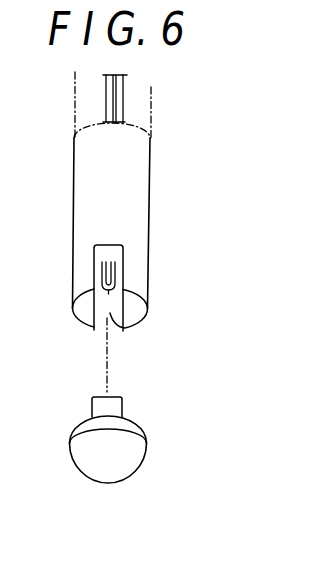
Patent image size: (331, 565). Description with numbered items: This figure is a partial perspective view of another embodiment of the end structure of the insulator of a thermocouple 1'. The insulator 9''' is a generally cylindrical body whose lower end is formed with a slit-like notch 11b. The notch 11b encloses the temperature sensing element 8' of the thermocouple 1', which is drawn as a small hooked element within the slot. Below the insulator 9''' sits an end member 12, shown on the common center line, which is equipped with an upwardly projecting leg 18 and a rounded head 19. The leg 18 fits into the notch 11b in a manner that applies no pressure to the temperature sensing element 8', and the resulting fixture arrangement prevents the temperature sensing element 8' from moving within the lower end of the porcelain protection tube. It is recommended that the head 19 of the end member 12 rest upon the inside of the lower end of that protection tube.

The thermocouple 1' is at (141, 85).
The insulator 9''' is at (142, 232).
The temperature sensing element 8' is at (75, 285).
The slit-like notch 11b is at (126, 331).
The leg 18 is at (115, 402).
The end member 12 is at (152, 436).
The head 19 is at (80, 462).